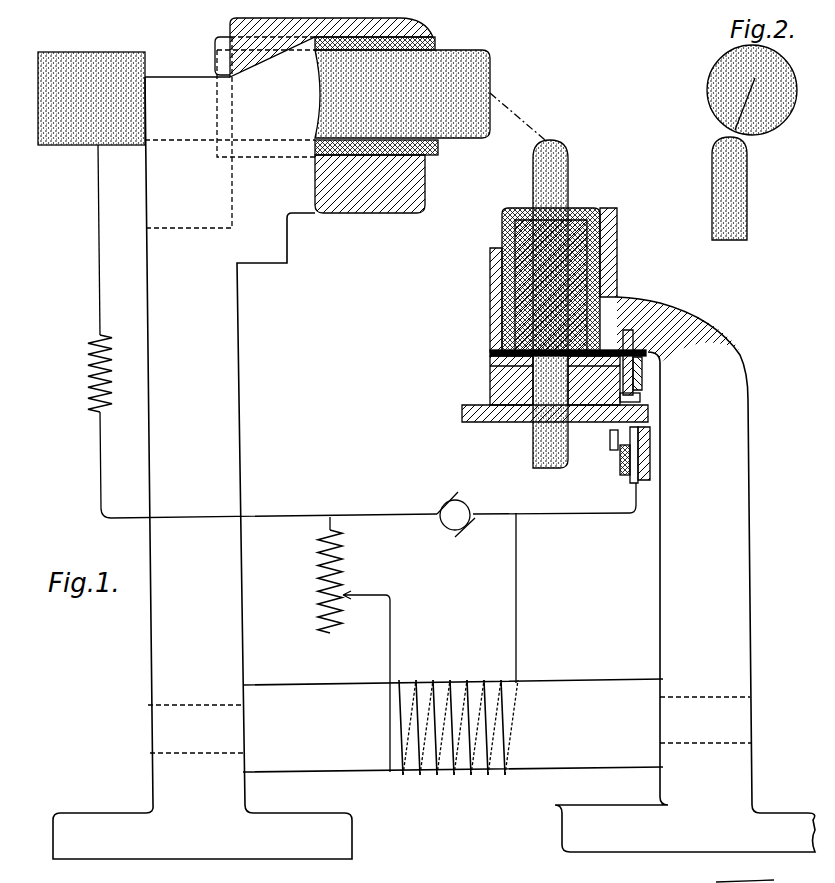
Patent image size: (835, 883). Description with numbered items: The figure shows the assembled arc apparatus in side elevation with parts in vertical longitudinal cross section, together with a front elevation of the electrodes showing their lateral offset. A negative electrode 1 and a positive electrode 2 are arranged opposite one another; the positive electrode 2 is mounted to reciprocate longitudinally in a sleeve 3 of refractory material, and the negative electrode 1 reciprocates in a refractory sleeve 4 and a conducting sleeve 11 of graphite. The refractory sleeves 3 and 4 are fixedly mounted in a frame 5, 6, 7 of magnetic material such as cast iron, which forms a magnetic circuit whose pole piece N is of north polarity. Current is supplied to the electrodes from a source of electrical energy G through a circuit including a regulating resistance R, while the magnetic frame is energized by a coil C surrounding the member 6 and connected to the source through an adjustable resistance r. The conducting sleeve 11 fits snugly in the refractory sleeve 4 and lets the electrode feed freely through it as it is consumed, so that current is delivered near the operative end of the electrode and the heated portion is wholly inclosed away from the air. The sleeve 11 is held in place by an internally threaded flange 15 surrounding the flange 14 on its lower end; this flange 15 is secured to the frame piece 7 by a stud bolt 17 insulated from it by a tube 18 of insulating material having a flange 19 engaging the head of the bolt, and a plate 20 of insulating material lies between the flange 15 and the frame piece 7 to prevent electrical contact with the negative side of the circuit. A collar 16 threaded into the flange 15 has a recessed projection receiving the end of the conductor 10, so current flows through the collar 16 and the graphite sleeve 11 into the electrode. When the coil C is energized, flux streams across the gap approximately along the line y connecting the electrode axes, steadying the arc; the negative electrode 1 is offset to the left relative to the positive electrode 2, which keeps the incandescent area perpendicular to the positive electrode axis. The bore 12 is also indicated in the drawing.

In FIG. 1, the negative electrode 1 is at (572, 182).
In FIG. 2, the negative electrode 1 is at (713, 196).
In FIG. 1, the positive electrode 2 is at (99, 70).
In FIG. 2, the positive electrode 2 is at (710, 77).
In FIG. 1, the sleeve of refractory material 3 is at (215, 42).
In FIG. 1, the refractory sleeve 4 is at (502, 232).
In FIG. 1, the frame 5 is at (202, 468).
In FIG. 1, the frame member 6 is at (453, 725).
In FIG. 1, the frame piece 7 is at (685, 574).
In FIG. 1, the conductor 10 is at (630, 480).
In FIG. 1, the conducting sleeve 11 is at (580, 252).
In FIG. 1, the bore 12 is at (515, 270).
In FIG. 1, the flange 14 is at (490, 378).
In FIG. 1, the internally threaded flange 15 is at (490, 392).
In FIG. 1, the collar 16 is at (500, 422).
In FIG. 1, the stud bolt 17 is at (660, 368).
In FIG. 1, the tube of insulating material 18 is at (645, 381).
In FIG. 1, the flange 19 is at (640, 397).
In FIG. 1, the plate of insulating material 20 is at (490, 352).
In FIG. 1, the pole piece N is at (490, 306).
In FIG. 1, the regulating resistance R is at (243, 331).
In FIG. 1, the adjustable resistance r is at (338, 644).
In FIG. 1, the source of electrical energy G is at (525, 583).
In FIG. 1, the coil C is at (458, 746).
In FIG. 1, the line connecting the axes of the electrodes y is at (548, 140).
In FIG. 2, the line connecting the axes of the electrodes y is at (727, 127).